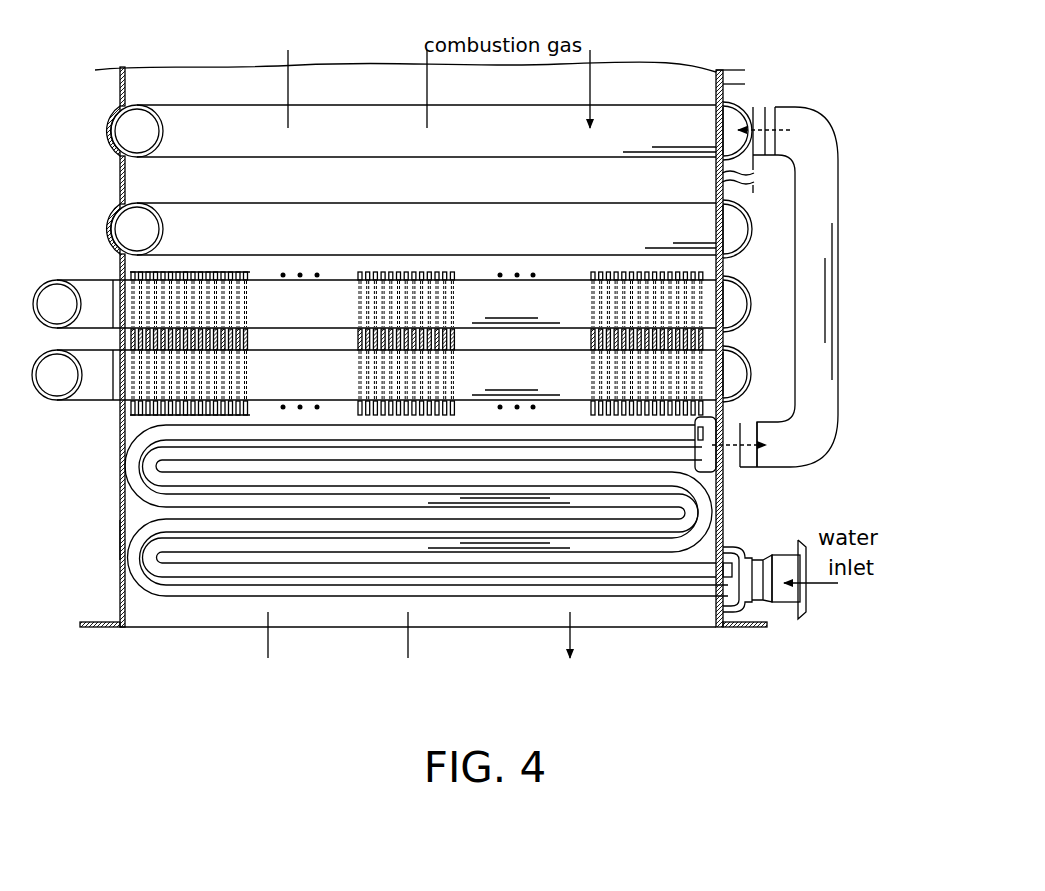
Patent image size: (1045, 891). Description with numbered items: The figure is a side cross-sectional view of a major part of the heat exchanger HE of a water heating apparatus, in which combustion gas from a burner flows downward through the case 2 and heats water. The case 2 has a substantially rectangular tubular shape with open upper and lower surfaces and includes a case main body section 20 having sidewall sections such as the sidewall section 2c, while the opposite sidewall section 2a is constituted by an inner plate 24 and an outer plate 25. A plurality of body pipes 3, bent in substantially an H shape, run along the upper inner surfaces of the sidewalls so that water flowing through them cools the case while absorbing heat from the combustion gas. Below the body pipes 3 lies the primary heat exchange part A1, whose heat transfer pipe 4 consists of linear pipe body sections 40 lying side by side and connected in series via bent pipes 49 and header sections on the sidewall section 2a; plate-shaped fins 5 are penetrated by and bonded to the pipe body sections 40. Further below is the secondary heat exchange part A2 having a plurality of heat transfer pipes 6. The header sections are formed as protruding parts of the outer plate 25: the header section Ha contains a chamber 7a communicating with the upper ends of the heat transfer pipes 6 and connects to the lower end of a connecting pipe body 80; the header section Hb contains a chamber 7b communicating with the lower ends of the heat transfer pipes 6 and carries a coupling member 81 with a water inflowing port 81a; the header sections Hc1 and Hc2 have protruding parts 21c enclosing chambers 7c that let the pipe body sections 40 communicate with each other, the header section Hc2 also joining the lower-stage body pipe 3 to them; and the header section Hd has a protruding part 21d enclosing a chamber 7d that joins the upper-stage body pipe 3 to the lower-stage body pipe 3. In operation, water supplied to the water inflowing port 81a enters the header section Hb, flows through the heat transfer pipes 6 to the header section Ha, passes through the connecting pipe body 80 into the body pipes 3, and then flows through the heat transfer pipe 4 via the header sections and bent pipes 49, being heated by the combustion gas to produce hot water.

The case 2 is at (118, 100).
The sidewall section 2a is at (730, 90).
The sidewall section 2c is at (122, 545).
The body pipe 3 is at (498, 220).
The heat transfer pipe 4 is at (485, 272).
The fin 5 is at (180, 272).
The heat transfer pipe 6 is at (497, 572).
The chamber 7a is at (710, 432).
The chamber 7b is at (746, 593).
The chamber 7c is at (737, 295).
The chamber 7d is at (740, 215).
The case main body section 20 is at (118, 167).
The protruding part 21c is at (753, 315).
The protruding part 21d is at (753, 230).
The inner plate 24 is at (718, 85).
The outer plate 25 is at (727, 72).
The pipe body section 40 is at (276, 368).
The bent pipe 49 is at (100, 358).
The connecting pipe body 80 is at (833, 212).
The coupling member 81 is at (783, 612).
The water inflowing port 81a is at (795, 593).
The heat exchanger HE is at (124, 40).
The primary heat exchange part A1 is at (330, 266).
The secondary heat exchange part A2 is at (117, 446).
The header section Ha is at (737, 459).
The header section Hb is at (741, 539).
The header section Hc1 is at (759, 378).
The header section Hc2 is at (759, 310).
The header section Hd is at (764, 172).